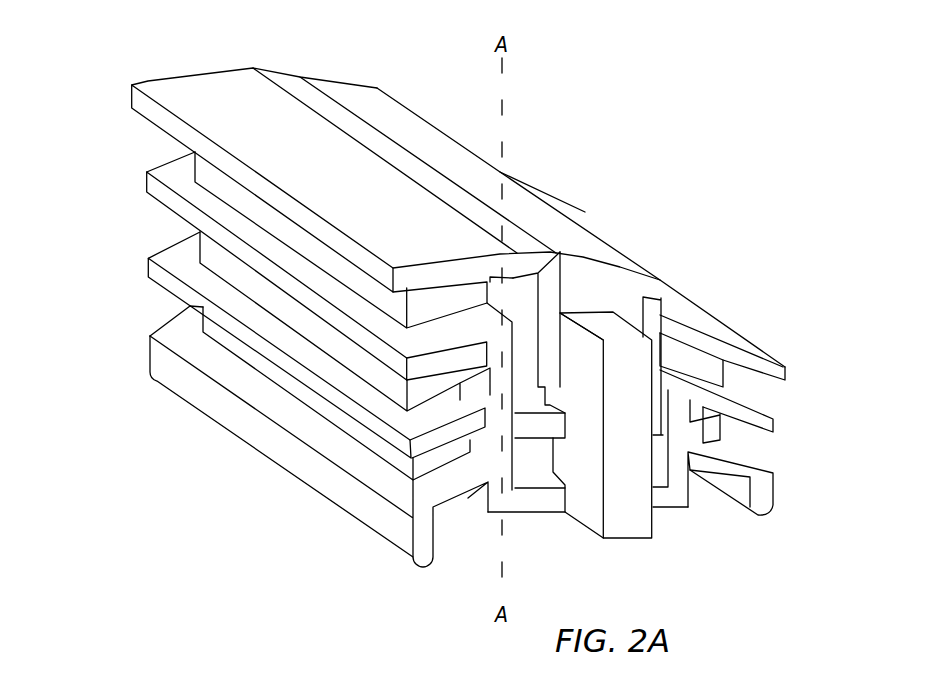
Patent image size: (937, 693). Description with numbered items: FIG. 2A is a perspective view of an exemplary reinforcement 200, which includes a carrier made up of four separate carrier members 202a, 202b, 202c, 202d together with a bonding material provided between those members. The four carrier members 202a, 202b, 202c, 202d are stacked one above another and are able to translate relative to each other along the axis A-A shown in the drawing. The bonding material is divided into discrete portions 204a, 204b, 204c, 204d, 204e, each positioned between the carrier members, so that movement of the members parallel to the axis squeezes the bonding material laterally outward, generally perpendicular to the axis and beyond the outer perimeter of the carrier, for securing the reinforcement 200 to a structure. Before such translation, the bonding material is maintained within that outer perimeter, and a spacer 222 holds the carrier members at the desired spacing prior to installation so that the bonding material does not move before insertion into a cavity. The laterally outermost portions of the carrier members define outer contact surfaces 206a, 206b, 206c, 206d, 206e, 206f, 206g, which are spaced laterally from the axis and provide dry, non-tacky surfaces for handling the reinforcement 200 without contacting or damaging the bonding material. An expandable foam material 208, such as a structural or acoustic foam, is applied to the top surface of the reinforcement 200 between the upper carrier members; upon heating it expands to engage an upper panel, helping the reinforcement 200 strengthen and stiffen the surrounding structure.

The reinforcement 200 is at (703, 160).
The carrier member 202a is at (130, 93).
The carrier member 202b is at (146, 177).
The carrier member 202c is at (147, 262).
The carrier member 202d is at (150, 353).
The discrete portion of bonding material 204a is at (208, 172).
The discrete portion of bonding material 204b is at (215, 250).
The discrete portion of bonding material 204c is at (215, 330).
The discrete portion of bonding material 204d is at (703, 366).
The discrete portion of bonding material 204e is at (722, 430).
The surface 206a is at (167, 120).
The surface 206b is at (288, 278).
The surface 206c is at (290, 365).
The surface 206d is at (297, 459).
The surface 206e is at (786, 376).
The surface 206f is at (705, 420).
The surface 206g is at (775, 507).
The expandable foam material 208 is at (411, 132).
The spacer 222 is at (630, 525).